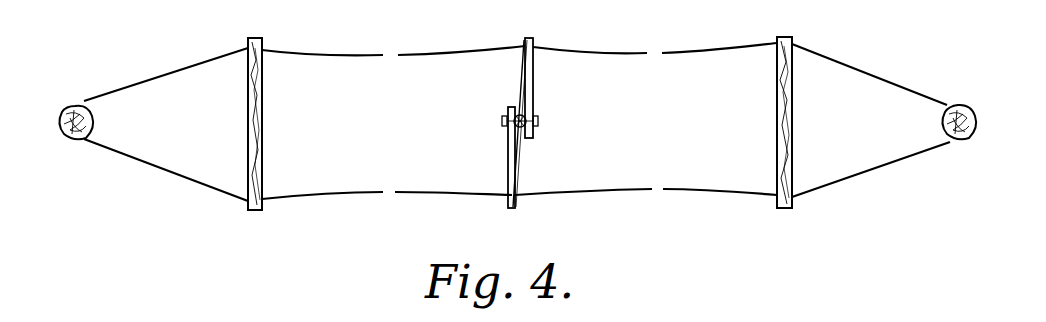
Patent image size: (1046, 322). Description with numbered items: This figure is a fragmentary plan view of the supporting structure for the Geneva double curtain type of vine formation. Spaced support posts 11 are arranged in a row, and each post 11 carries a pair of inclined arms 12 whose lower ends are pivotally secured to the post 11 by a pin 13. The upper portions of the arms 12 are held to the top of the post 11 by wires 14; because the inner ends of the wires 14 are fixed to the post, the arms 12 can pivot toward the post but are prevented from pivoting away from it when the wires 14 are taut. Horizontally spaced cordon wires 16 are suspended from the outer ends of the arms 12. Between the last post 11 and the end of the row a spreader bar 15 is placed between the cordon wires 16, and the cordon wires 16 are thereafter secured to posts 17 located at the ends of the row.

The support post 11 is at (513, 123).
The inclined arm 12 is at (533, 88).
The pin 13 is at (540, 120).
The wire 14 is at (520, 82).
The spreader bar 15 is at (258, 88).
The cordon wire 16 is at (418, 55).
The end post 17 is at (96, 127).